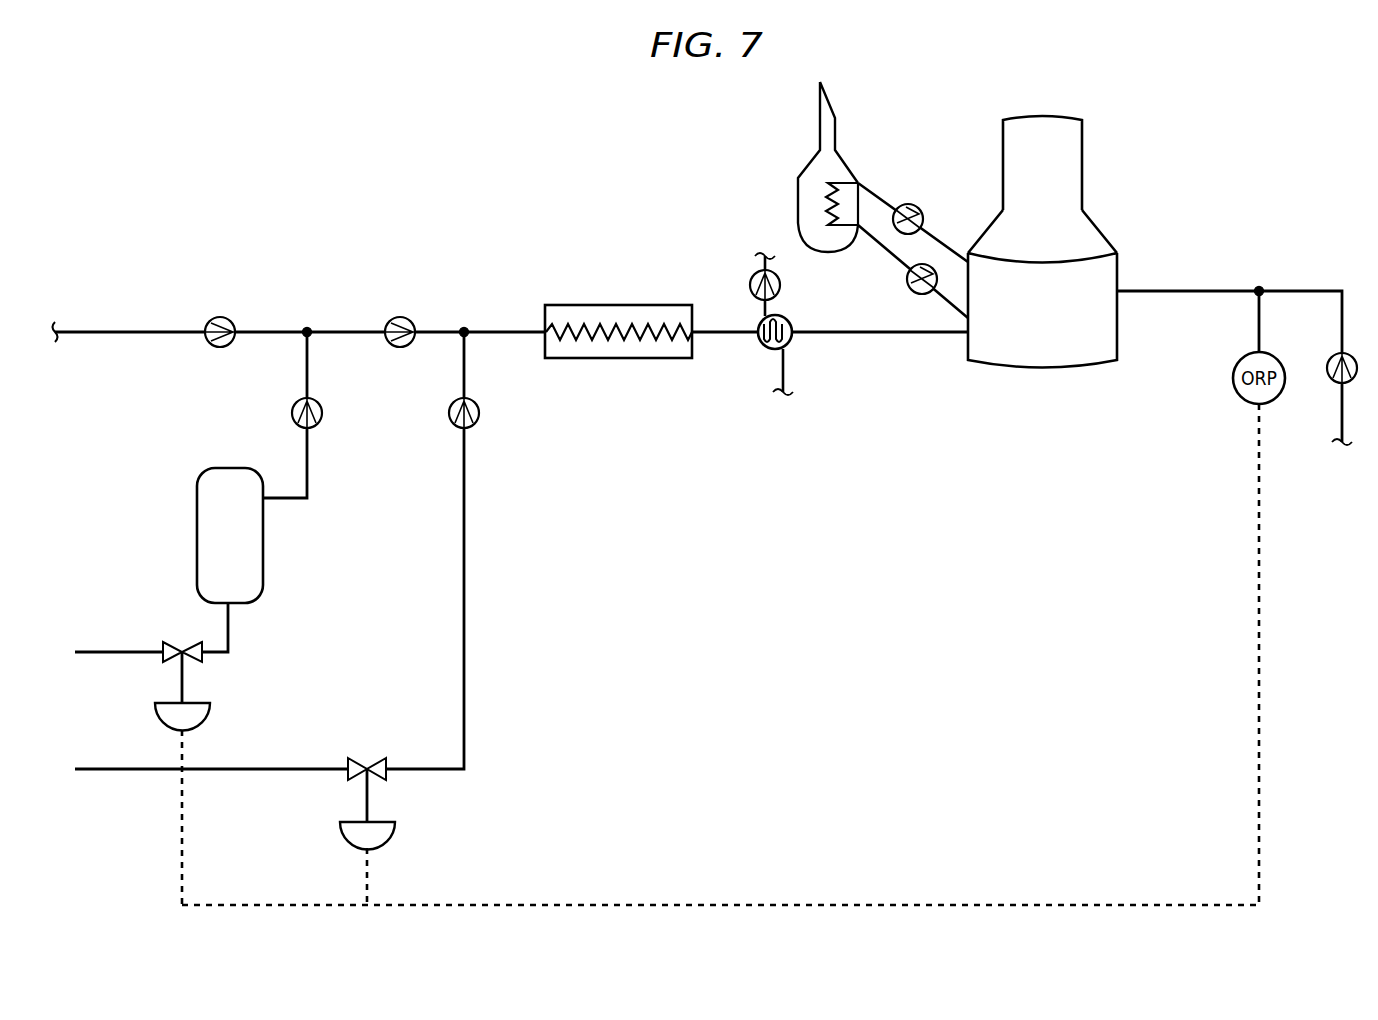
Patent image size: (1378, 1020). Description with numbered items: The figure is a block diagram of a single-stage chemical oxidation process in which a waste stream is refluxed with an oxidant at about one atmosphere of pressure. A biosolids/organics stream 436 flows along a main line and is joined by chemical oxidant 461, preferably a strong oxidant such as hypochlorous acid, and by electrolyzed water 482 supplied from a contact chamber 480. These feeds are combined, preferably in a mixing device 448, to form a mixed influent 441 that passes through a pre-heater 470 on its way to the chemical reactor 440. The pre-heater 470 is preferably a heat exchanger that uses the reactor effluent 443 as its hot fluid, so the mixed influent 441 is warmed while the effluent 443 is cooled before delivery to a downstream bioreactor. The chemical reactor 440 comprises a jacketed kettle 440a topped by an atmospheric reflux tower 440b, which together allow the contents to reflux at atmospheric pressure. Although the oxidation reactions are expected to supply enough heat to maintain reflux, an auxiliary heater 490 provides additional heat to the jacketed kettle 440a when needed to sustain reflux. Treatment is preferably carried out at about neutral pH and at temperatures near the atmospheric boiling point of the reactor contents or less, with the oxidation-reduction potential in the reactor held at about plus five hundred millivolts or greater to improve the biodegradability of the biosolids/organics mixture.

The biosolids/organics stream 436 is at (266, 330).
The mixing device 448 is at (614, 304).
The mixed influent 441 is at (718, 330).
The pre-heater 470 is at (794, 322).
The reactor effluent 443 is at (880, 357).
The auxiliary heater 490 is at (852, 114).
The chemical reactor 440 is at (1084, 221).
The jacketed kettle 440a is at (1117, 332).
The atmospheric reflux tower 440b is at (1082, 118).
The contact chamber 480 is at (198, 618).
The electrolyzed water 482 is at (307, 478).
The chemical oxidant 461 is at (467, 596).